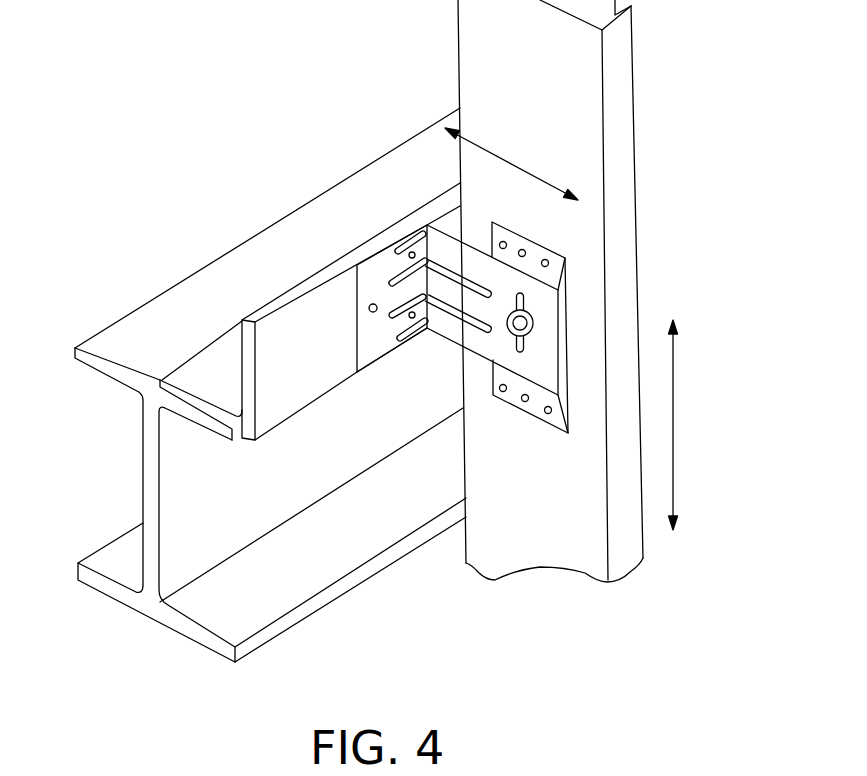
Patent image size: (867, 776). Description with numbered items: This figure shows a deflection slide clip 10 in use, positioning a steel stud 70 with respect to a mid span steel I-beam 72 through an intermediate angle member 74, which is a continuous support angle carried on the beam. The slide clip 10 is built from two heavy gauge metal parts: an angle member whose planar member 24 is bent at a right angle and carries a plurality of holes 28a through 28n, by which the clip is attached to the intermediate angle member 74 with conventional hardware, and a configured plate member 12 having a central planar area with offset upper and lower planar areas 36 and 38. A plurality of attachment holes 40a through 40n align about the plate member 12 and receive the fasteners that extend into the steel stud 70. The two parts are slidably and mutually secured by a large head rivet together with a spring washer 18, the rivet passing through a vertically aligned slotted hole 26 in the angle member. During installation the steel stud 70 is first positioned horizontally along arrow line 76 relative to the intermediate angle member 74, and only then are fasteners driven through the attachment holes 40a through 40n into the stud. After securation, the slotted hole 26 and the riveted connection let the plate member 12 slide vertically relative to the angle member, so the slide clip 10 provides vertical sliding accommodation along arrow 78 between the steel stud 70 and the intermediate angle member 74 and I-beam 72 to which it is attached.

The deflection slide clip 10 is at (385, 305).
The plate member 12 is at (570, 329).
The spring washer 18 is at (535, 325).
The planar member 24 is at (385, 350).
The slotted hole 26 is at (523, 349).
The hole 28a is at (412, 252).
The hole 28n is at (418, 332).
The upper planar area 36 is at (518, 235).
The lower planar area 38 is at (533, 419).
The attachment hole 40a is at (500, 242).
The attachment hole 40n is at (552, 415).
The steel stud 70 is at (622, 146).
The steel I-beam 72 is at (143, 328).
The intermediate angle member 74 is at (292, 387).
The arrow line 76 is at (515, 163).
The arrow 78 is at (676, 468).